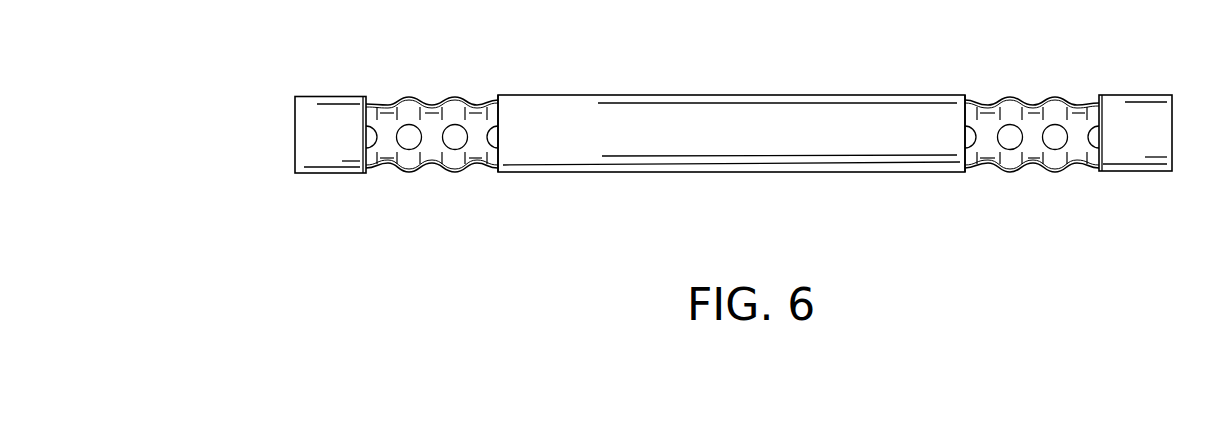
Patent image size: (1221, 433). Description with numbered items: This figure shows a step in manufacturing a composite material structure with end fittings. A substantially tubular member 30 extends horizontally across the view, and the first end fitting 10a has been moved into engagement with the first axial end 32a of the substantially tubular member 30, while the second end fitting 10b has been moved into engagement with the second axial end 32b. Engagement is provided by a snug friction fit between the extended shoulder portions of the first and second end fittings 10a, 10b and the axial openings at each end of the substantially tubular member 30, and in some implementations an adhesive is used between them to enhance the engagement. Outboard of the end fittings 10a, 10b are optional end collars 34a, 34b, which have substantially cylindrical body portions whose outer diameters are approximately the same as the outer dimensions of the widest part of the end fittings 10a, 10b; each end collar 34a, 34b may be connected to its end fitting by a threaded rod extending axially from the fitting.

The substantially tubular member 30 is at (897, 111).
The end collar 34a is at (332, 96).
The end collar 34b is at (1152, 94).
The first end fitting 10a is at (397, 172).
The second end fitting 10b is at (1057, 172).
The first axial end 32a is at (530, 195).
The second axial end 32b is at (935, 195).